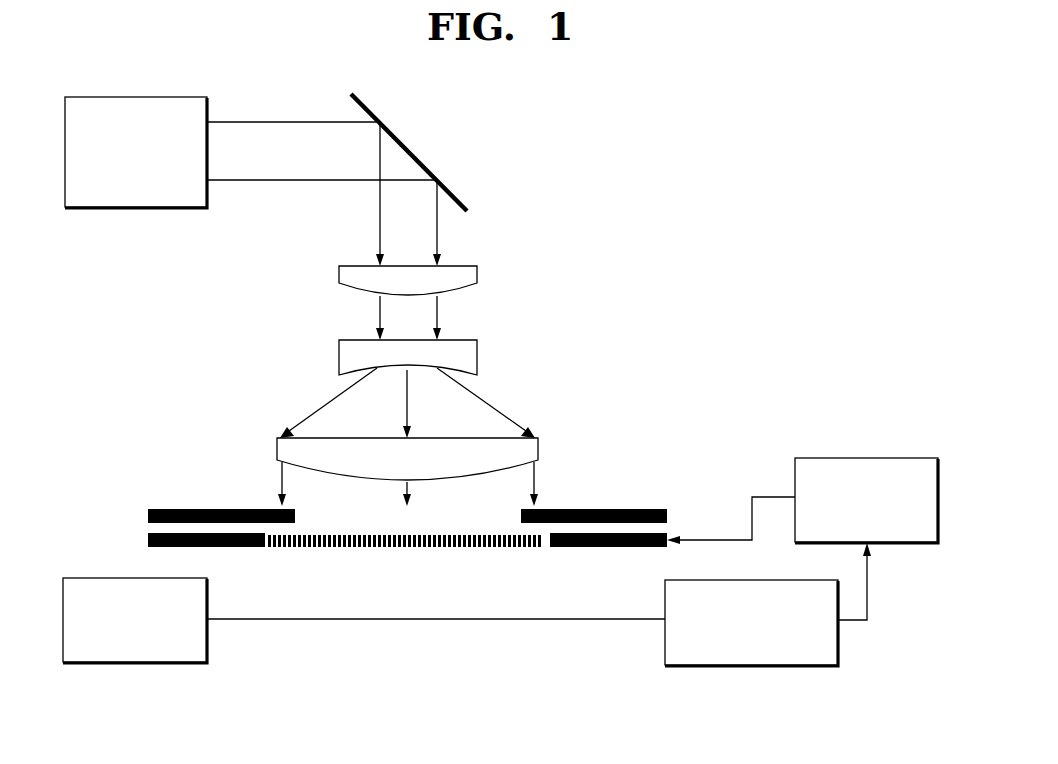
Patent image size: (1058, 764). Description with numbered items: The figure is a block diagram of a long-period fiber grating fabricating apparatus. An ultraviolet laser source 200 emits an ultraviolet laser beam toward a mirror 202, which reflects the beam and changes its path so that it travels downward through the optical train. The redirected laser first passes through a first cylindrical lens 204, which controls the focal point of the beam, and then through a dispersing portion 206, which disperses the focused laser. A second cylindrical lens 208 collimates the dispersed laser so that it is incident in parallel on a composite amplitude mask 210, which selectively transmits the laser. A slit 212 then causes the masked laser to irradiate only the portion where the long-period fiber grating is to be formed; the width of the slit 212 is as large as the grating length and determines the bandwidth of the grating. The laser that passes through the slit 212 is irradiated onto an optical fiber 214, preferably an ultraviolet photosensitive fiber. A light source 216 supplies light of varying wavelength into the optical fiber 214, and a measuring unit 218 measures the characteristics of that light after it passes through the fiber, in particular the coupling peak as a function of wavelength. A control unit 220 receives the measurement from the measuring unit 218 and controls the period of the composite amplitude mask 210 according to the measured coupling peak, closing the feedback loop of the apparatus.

The ultraviolet laser source 200 is at (138, 207).
The mirror 202 is at (405, 145).
The first cylindrical lens 204 is at (477, 272).
The dispersing portion 206 is at (477, 346).
The second cylindrical lens 208 is at (538, 450).
The composite amplitude mask 210 is at (148, 536).
The slit 212 is at (648, 509).
The optical fiber 214 is at (430, 620).
The light source 216 is at (138, 663).
The measuring unit 218 is at (750, 665).
The control unit 220 is at (862, 458).